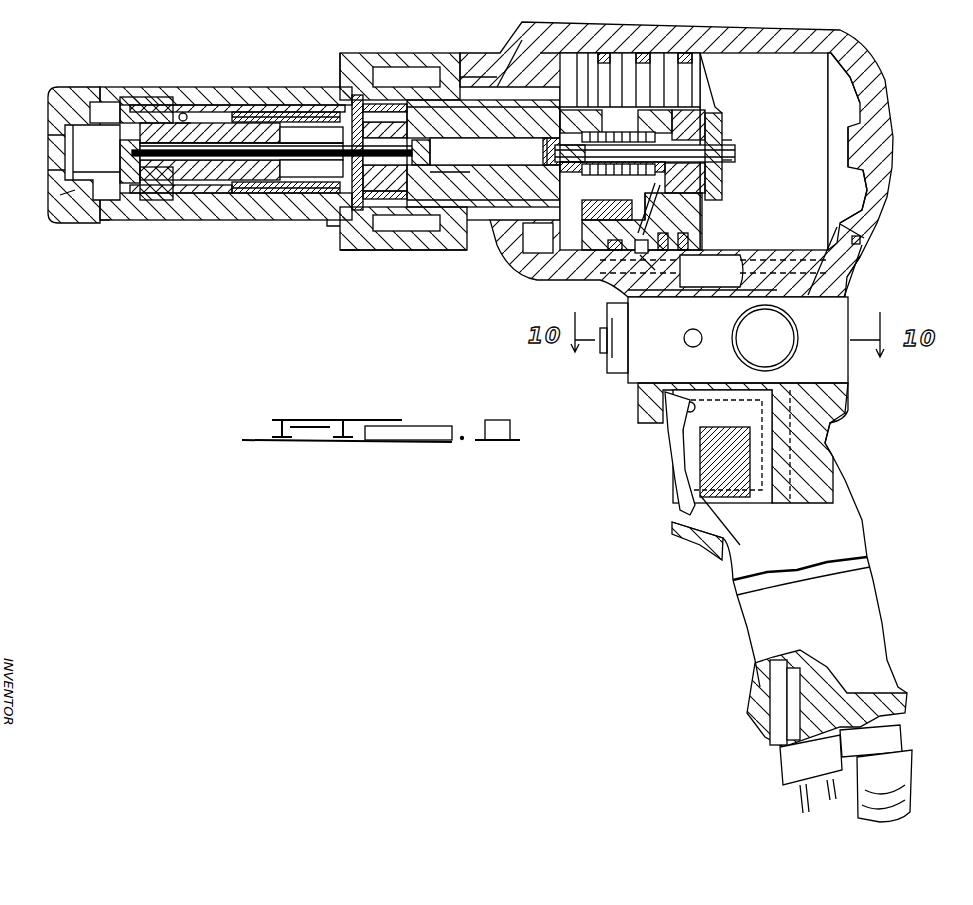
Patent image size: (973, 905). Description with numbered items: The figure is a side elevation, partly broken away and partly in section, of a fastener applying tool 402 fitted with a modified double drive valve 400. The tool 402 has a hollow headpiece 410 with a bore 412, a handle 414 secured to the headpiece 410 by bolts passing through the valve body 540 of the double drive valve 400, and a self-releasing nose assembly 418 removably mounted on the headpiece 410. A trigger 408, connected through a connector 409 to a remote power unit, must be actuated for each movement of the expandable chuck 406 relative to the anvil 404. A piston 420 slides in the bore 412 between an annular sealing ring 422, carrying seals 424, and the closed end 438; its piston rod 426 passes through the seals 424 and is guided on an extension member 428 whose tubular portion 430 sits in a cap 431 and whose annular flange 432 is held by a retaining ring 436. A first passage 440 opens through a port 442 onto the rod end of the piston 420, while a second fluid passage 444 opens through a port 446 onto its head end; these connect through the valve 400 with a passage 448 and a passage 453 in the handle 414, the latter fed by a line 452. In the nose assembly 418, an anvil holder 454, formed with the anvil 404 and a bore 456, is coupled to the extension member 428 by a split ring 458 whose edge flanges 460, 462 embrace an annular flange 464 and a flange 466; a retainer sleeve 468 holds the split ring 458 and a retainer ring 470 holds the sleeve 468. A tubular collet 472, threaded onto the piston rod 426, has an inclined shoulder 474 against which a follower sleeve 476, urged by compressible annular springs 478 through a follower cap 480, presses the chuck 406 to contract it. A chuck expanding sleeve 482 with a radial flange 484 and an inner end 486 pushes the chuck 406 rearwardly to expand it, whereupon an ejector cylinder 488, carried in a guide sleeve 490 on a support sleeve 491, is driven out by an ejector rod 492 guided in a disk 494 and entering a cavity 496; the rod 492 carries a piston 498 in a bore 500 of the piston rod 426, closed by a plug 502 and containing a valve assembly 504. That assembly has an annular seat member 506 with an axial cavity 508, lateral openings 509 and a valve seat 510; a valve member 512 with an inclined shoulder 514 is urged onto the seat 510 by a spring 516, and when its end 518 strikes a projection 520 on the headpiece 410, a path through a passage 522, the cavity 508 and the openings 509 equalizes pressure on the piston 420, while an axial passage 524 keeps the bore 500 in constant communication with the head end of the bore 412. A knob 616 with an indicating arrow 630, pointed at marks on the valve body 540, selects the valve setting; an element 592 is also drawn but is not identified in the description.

The double drive valve 400 is at (895, 285).
The fastener applying tool 402 is at (430, 320).
The anvil 404 is at (67, 192).
The expandable chuck 406 is at (153, 110).
The trigger 408 is at (677, 487).
The connector 409 is at (803, 770).
The headpiece 410 is at (888, 184).
The bore 412 is at (865, 30).
The handle 414 is at (823, 498).
The self-releasing nose assembly 418 is at (177, 279).
The piston 420 is at (690, 240).
The annular sealing ring 422 is at (567, 262).
The seals 424 is at (533, 228).
The piston rod 426 is at (452, 126).
The extension member 428 is at (453, 152).
The tubular portion 430 is at (465, 77).
The cap 431 is at (450, 53).
The annular flange 432 is at (565, 78).
The retaining ring 436 is at (595, 48).
The closed end 438 is at (893, 110).
The first passage 440 is at (718, 270).
The port 442 is at (647, 263).
The second fluid passage 444 is at (870, 260).
The port 446 is at (847, 227).
The passage 448 is at (833, 398).
The line 452 is at (891, 767).
The passage 453 is at (813, 430).
The anvil holder 454 is at (88, 87).
The bore 456 is at (118, 102).
The split ring 458 is at (392, 53).
The edge flange 460 is at (345, 53).
The edge flange 462 is at (395, 235).
The annular flange 464 is at (392, 222).
The flange 466 is at (428, 75).
The retainer sleeve 468 is at (357, 262).
The retainer ring 470 is at (330, 222).
The collet 472 is at (253, 105).
The inclined shoulder 474 is at (165, 190).
The follower sleeve 476 is at (220, 117).
The compressible annular springs 478 is at (273, 117).
The follower cap 480 is at (180, 180).
The chuck expanding sleeve 482 is at (62, 172).
The radial flange 484 is at (63, 220).
The inner end 486 is at (84, 162).
The ejector cylinder 488 is at (125, 190).
The guide sleeve 490 is at (240, 180).
The support sleeve 491 is at (270, 188).
The ejector rod 492 is at (292, 162).
The disk 494 is at (345, 135).
The cavity 496 is at (185, 112).
The piston 498 is at (305, 152).
The bore 500 is at (487, 165).
The plug 502 is at (450, 182).
The valve assembly 504 is at (746, 141).
The annular seat member 506 is at (708, 178).
The axial cavity 508 is at (722, 143).
The lateral openings 509 is at (722, 160).
The valve seat 510 is at (714, 117).
The valve member 512 is at (595, 198).
The inclined shoulder 514 is at (715, 107).
The spring 516 is at (636, 215).
The end 518 is at (735, 150).
The projection 520 is at (870, 150).
The passage 522 is at (700, 205).
The axial passage 524 is at (627, 110).
The valve body 540 is at (840, 307).
The knob 592 is at (608, 347).
The knob 616 is at (778, 340).
The indicating arrow 630 is at (750, 352).